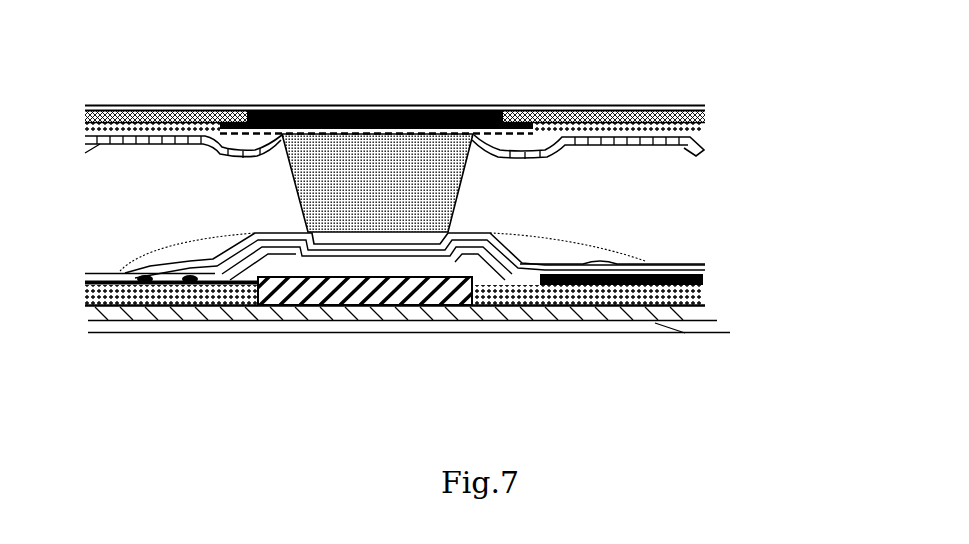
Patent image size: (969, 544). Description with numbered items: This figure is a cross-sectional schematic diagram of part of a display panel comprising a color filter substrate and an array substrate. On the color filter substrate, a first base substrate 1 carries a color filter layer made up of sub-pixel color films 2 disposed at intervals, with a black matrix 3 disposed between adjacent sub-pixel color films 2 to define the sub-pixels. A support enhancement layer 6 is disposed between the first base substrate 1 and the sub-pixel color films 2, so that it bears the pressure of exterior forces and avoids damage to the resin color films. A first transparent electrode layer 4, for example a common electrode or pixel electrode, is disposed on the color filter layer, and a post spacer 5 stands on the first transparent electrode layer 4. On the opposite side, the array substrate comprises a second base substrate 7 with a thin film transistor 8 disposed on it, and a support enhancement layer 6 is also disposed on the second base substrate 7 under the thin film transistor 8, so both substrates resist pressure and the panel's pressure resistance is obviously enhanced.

The first base substrate 1 is at (700, 108).
The sub-pixel color film 2 is at (703, 132).
The black matrix 3 is at (460, 112).
The first transparent electrode layer 4 is at (283, 104).
The post spacer 5 is at (357, 155).
The support enhancement layer 6 is at (568, 113).
The second base substrate 7 is at (693, 332).
The thin film transistor 8 is at (537, 256).